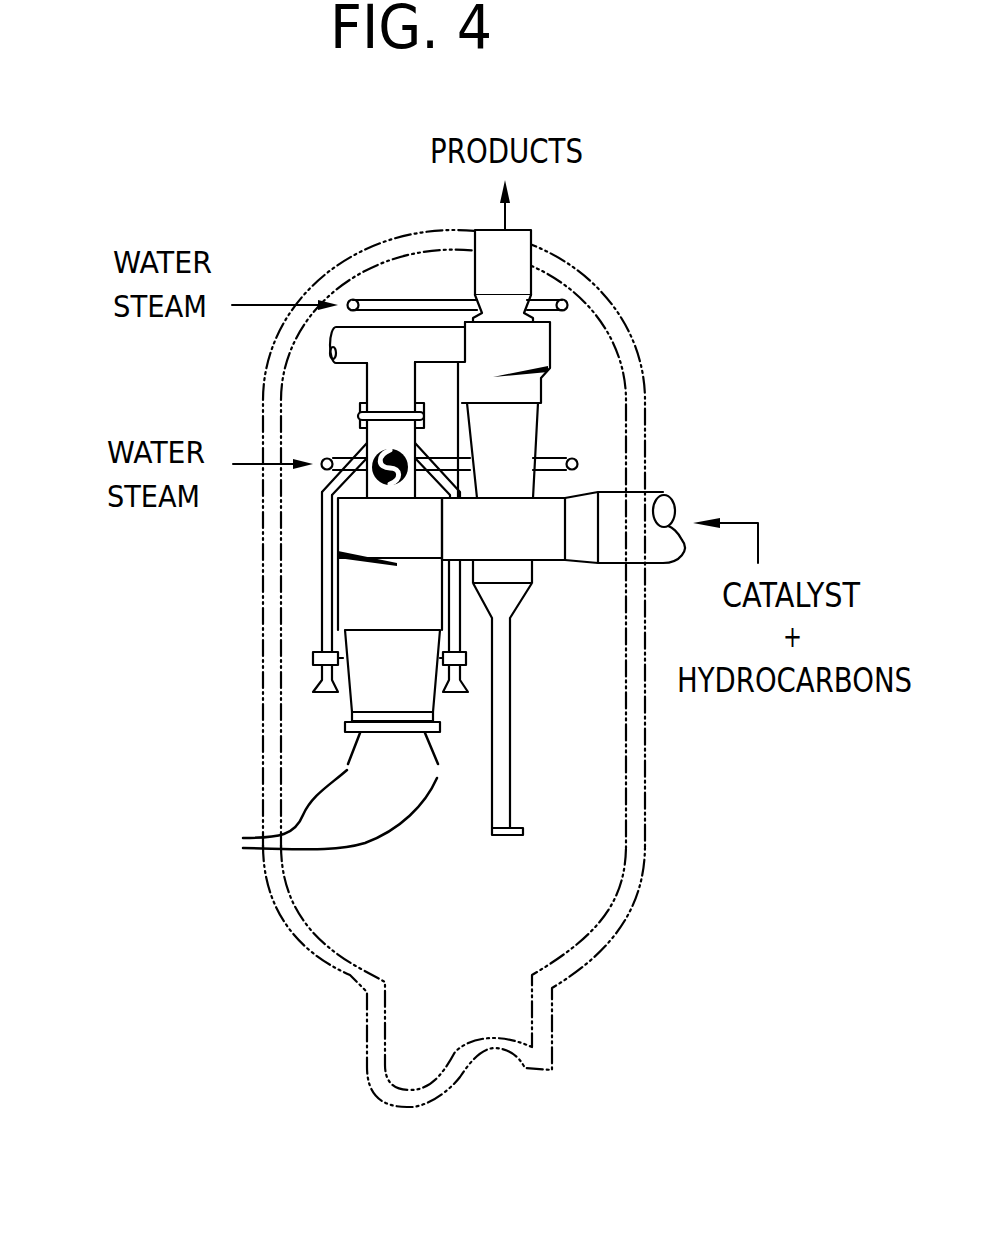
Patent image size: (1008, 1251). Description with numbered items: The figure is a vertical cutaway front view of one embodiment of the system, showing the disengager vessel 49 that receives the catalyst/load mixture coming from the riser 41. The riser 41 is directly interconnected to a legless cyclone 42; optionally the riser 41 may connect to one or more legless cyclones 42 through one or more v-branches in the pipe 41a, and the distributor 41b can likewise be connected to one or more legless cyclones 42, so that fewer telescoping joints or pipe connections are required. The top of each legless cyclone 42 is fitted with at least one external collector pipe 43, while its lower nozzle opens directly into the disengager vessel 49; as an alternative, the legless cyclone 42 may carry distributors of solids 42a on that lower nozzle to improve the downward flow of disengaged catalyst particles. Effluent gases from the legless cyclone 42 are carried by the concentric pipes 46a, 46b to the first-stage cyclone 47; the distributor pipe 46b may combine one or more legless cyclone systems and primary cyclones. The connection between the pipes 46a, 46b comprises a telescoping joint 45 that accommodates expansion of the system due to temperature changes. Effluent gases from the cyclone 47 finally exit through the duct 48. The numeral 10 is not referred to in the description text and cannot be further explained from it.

The reactor vessel 10 is at (588, 462).
The riser 41 is at (635, 503).
The pipe 41a is at (535, 530).
The distributor 41b is at (386, 476).
The legless cyclone 42 is at (397, 597).
The distributors of solids 42a is at (310, 798).
The external collector pipes 43 is at (314, 643).
The telescoping joint 45 is at (358, 420).
The concentric pipe 46a is at (366, 440).
The distributor pipe 46b is at (366, 380).
The cyclone 47 is at (540, 387).
The duct 48 is at (510, 257).
The disengager vessel 49 is at (645, 908).